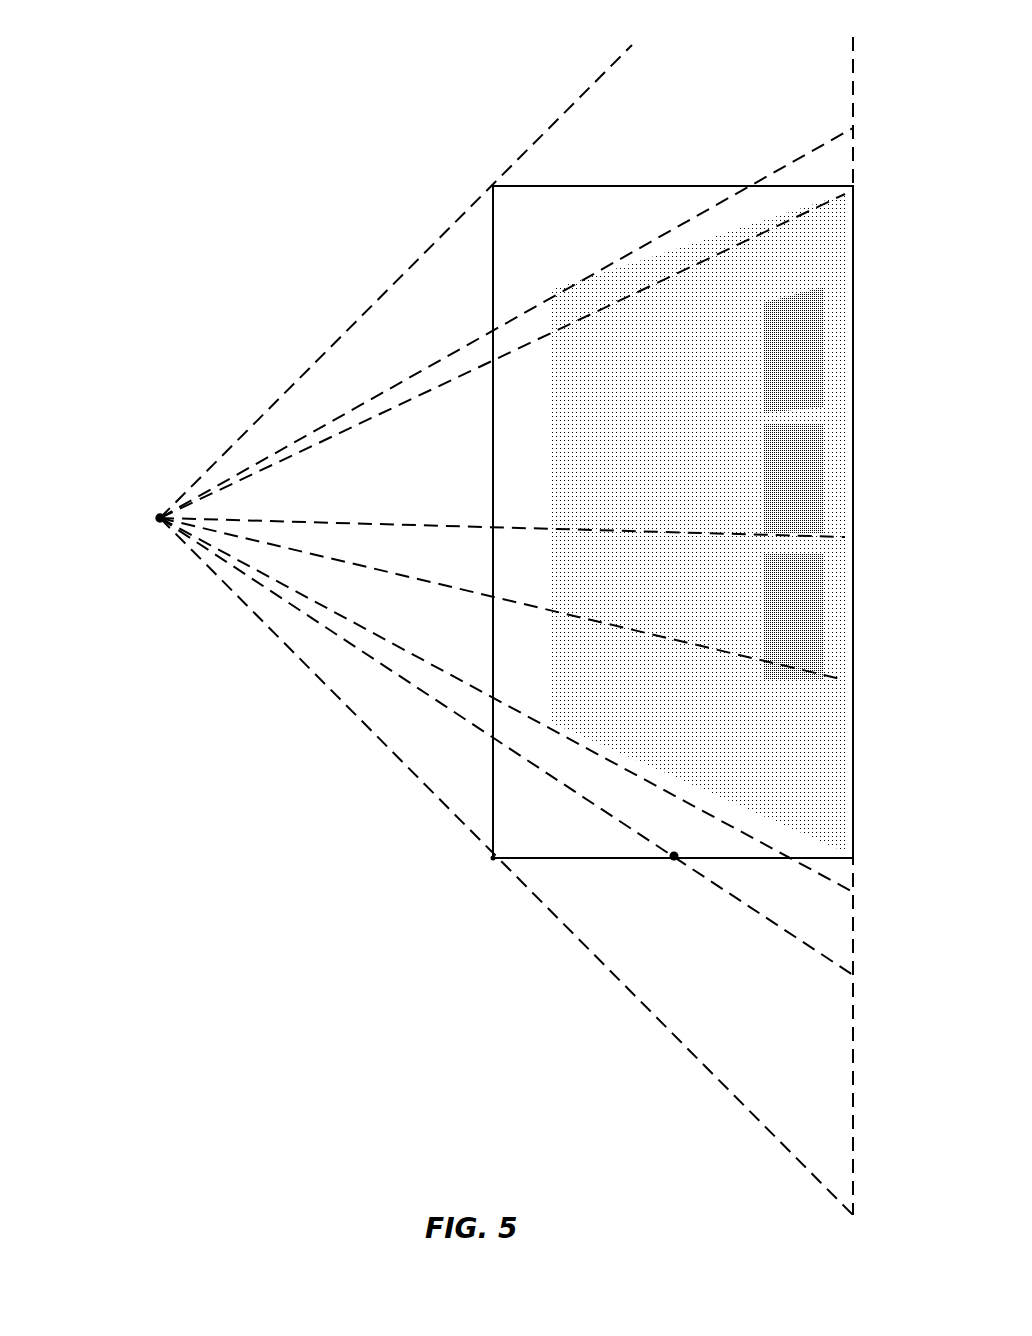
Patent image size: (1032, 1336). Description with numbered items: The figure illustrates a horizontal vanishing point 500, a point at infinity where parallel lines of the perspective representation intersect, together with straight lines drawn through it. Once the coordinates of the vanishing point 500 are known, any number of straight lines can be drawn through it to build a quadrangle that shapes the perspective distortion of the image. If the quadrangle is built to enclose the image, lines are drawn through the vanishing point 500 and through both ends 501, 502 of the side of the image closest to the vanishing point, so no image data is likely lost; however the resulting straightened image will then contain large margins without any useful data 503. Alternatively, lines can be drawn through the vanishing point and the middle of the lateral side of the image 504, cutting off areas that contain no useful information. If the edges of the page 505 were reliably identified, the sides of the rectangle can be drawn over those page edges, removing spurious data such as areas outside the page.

The horizontal vanishing point 500 is at (155, 512).
The end of the image side closest to the vanishing point 501 is at (492, 183).
The end of the image side closest to the vanishing point 502 is at (490, 862).
The margins without useful data 503 is at (623, 908).
The middle of the lateral side of the image 504 is at (675, 868).
The edges of the page 505 is at (685, 218).